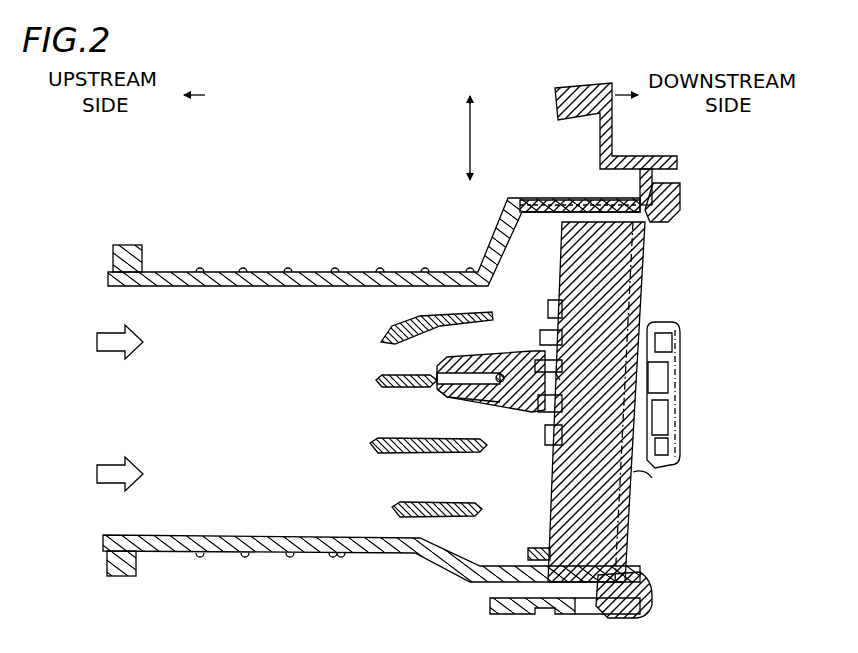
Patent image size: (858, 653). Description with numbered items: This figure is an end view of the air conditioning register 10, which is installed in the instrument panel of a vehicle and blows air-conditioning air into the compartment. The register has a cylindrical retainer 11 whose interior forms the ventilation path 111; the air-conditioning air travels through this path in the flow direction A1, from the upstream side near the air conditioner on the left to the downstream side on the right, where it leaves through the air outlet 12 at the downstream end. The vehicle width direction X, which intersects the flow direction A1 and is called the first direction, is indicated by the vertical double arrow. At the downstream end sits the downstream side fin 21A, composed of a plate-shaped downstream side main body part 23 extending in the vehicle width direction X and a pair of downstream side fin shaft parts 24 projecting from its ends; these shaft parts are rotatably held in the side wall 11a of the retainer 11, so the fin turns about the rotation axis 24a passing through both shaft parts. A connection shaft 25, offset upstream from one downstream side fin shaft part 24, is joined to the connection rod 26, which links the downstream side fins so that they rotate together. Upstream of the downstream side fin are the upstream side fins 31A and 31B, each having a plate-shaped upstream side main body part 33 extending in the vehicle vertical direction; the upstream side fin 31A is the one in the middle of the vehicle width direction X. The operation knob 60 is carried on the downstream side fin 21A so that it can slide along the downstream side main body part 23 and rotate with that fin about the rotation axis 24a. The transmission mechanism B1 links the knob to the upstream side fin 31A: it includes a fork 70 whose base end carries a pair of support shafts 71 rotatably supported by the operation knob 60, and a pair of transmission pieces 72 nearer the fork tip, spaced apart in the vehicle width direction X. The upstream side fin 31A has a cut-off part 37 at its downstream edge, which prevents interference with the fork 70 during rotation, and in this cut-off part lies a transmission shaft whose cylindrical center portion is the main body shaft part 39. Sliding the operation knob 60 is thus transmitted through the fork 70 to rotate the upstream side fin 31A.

The air conditioning register 10 is at (178, 180).
The retainer 11 is at (364, 270).
The side wall 11a is at (532, 197).
The air outlet 12 is at (672, 218).
The downstream side fin 21A is at (634, 551).
The downstream side main body part 23 is at (626, 512).
The downstream side fin shaft part 24 is at (600, 606).
The rotation axis 24a is at (636, 478).
The connection shaft 25 is at (556, 606).
The connection rod 26 is at (528, 550).
The upstream side main body part 33 is at (382, 414).
The upstream side fin 31A is at (378, 381).
The upstream side fin 31B is at (383, 334).
The cut-off part 37 is at (437, 378).
The main body shaft part 39 is at (497, 376).
The operation knob 60 is at (655, 318).
The fork 70 is at (490, 412).
The support shaft 71 is at (556, 376).
The transmission piece 72 is at (445, 393).
The ventilation path 111 is at (206, 356).
The flow direction A1 is at (115, 360).
The transmission mechanism B1 is at (503, 346).
The vehicle width direction X is at (474, 135).